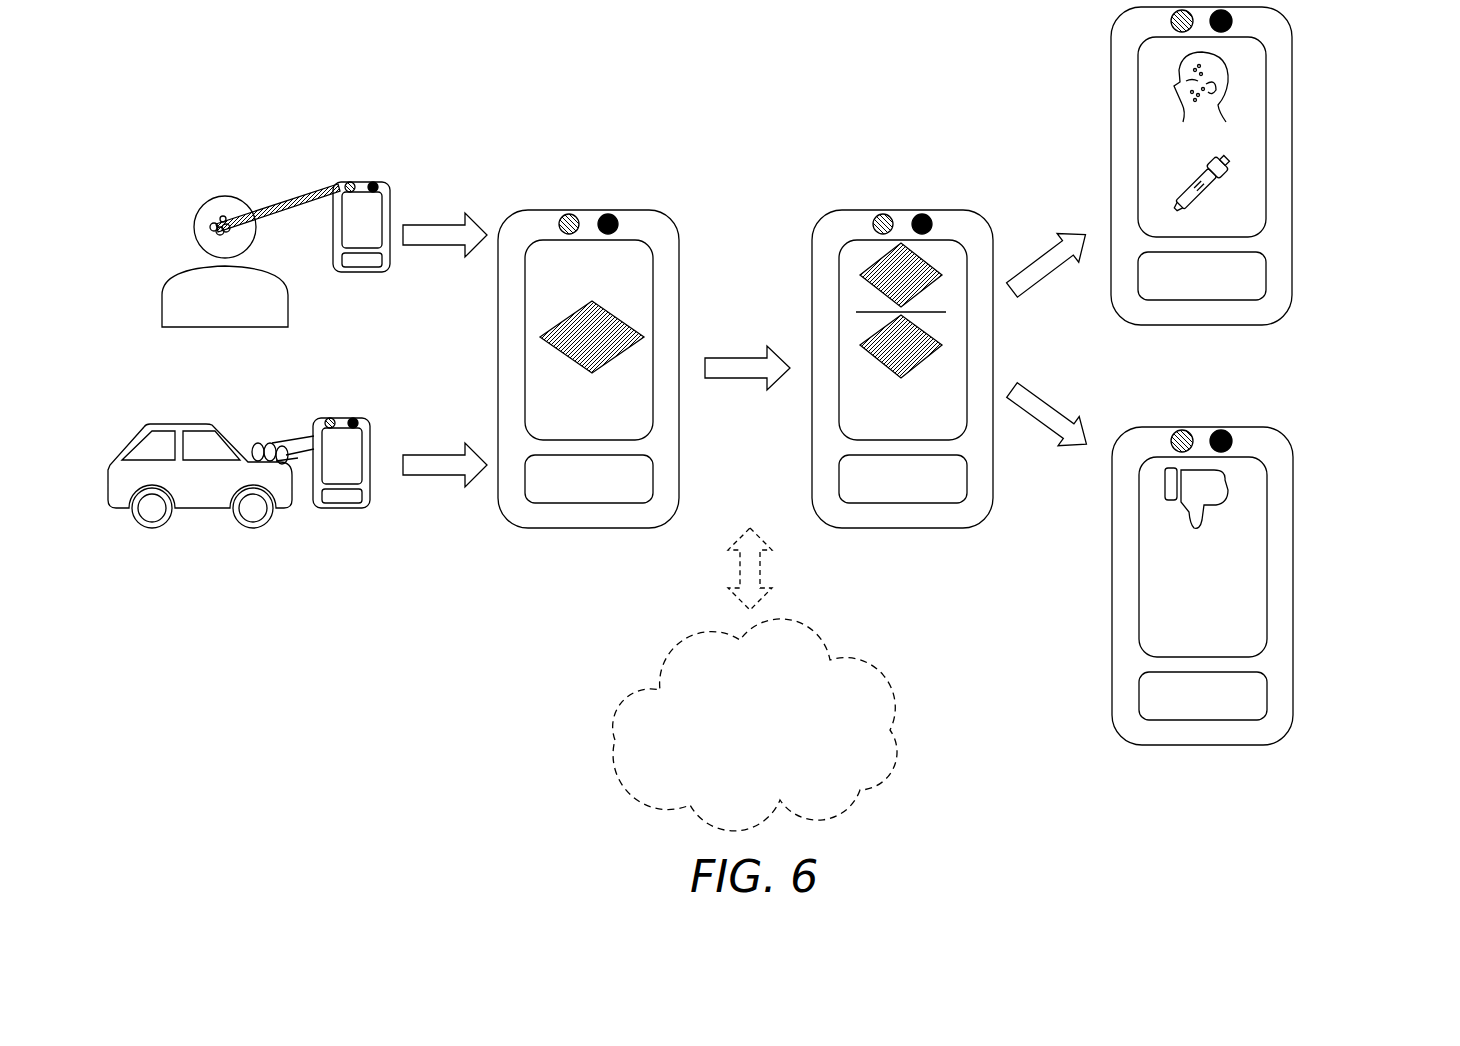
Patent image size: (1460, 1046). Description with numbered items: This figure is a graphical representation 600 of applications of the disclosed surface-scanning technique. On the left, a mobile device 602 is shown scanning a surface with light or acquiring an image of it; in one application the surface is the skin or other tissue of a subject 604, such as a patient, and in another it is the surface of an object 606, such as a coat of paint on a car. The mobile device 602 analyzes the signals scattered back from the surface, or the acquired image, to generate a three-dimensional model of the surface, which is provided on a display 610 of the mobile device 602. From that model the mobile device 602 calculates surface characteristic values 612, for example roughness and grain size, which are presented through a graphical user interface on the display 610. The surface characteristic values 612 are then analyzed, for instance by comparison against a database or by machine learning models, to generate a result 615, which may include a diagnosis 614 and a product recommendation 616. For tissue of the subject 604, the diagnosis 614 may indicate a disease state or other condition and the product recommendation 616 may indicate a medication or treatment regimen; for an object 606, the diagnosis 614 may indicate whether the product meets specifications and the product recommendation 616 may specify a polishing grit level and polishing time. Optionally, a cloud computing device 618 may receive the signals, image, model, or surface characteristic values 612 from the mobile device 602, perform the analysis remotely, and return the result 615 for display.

The graphical representation 600 is at (174, 110).
The mobile device 602 is at (363, 182).
The subject 604 is at (228, 197).
The object 606 is at (168, 425).
The display 610 is at (596, 210).
The surface characteristic values 612 is at (840, 406).
The diagnosis 614 is at (1174, 87).
The result 615 is at (1022, 45).
The product recommendation 616 is at (1193, 178).
The cloud computing device 618 is at (608, 738).